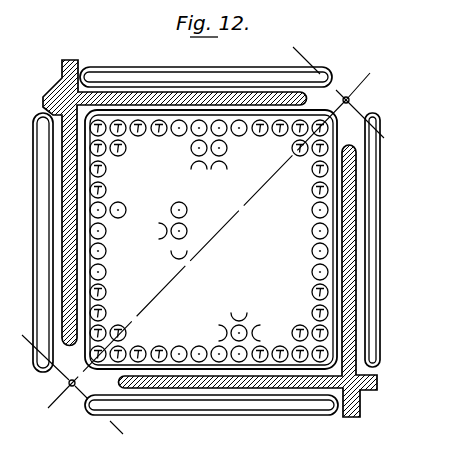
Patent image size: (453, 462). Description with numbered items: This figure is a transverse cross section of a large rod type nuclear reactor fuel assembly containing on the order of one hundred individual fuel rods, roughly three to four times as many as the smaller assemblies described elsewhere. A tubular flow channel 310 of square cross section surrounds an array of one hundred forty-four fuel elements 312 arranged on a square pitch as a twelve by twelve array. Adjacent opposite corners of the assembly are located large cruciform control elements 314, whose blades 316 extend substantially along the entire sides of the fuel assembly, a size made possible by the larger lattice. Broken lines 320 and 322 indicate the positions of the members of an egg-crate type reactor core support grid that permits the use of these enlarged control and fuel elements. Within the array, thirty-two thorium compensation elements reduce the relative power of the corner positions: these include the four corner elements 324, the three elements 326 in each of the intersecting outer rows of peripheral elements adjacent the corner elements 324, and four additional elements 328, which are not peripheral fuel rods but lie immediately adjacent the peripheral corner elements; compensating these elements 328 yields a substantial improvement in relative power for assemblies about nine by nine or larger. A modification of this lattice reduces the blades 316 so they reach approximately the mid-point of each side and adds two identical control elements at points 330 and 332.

The flow channel 310 is at (215, 394).
The fuel elements 312 is at (313, 215).
The cruciform control elements 314 is at (52, 96).
The blades 316 is at (107, 99).
The broken lines 320 is at (108, 418).
The broken lines 322 is at (52, 410).
The corner elements 324 is at (104, 122).
The compensation elements in outer rows 326 is at (155, 121).
The compensation elements 328 is at (126, 149).
The point for additional control element 330 is at (74, 387).
The point for additional control element 332 is at (348, 96).